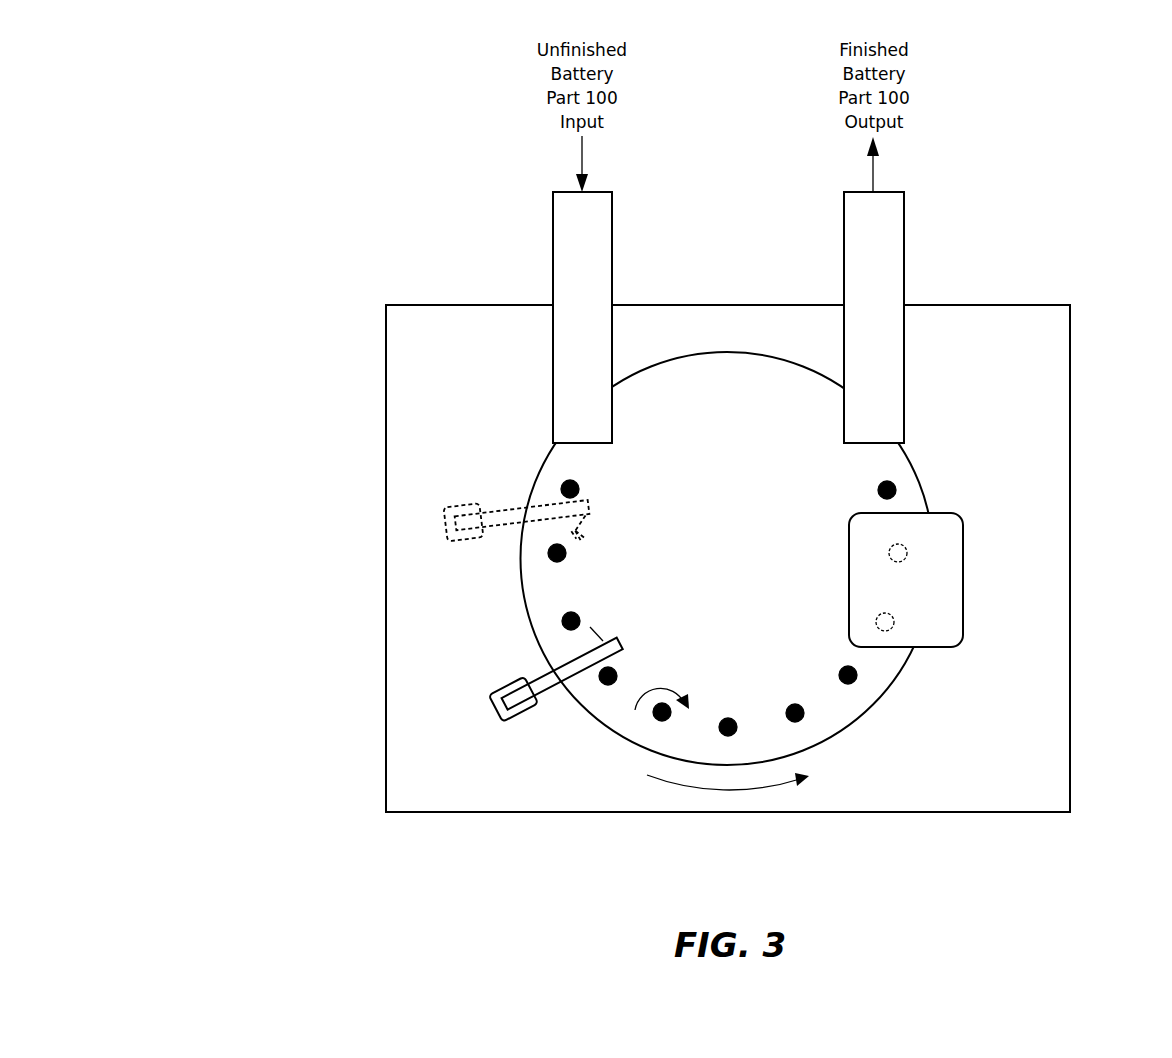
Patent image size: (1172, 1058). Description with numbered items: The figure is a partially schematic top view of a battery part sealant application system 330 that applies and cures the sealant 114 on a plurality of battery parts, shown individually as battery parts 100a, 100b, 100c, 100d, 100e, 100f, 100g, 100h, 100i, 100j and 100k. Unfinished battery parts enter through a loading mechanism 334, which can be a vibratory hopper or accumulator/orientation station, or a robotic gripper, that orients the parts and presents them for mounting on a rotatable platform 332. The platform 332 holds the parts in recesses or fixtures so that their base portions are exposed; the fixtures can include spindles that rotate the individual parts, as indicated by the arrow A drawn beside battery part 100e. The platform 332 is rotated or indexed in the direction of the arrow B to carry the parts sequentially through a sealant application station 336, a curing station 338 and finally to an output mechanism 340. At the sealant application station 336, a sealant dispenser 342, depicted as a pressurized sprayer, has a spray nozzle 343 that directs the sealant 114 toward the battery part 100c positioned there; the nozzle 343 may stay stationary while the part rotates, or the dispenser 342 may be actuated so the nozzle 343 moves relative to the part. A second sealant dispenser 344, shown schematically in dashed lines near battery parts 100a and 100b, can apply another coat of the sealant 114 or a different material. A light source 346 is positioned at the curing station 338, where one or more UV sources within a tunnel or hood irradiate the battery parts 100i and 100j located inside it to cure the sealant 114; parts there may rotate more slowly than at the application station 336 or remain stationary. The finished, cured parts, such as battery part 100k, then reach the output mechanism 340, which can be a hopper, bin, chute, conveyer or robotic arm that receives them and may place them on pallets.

The battery part sealant application system 330 is at (240, 278).
The rotatable platform 332 is at (725, 352).
The loading mechanism 334 is at (582, 317).
The sealant application station 336 is at (540, 665).
The curing station 338 is at (996, 580).
The output mechanism 340 is at (874, 317).
The sealant dispenser 342 is at (553, 683).
The spray nozzle 343 is at (590, 631).
The sealant dispenser 344 is at (490, 508).
The light source 346 is at (906, 580).
The sealant 114 is at (598, 628).
The battery part 100a is at (578, 489).
The battery part 100b is at (566, 553).
The battery part 100c is at (564, 618).
The battery part 100d is at (616, 672).
The battery part 100e is at (655, 720).
The battery part 100f is at (728, 718).
The battery part 100g is at (795, 704).
The battery part 100h is at (843, 668).
The battery part 100i is at (876, 620).
The battery part 100j is at (889, 552).
The battery part 100k is at (878, 489).
The arrow A is at (660, 690).
The arrow B is at (728, 793).